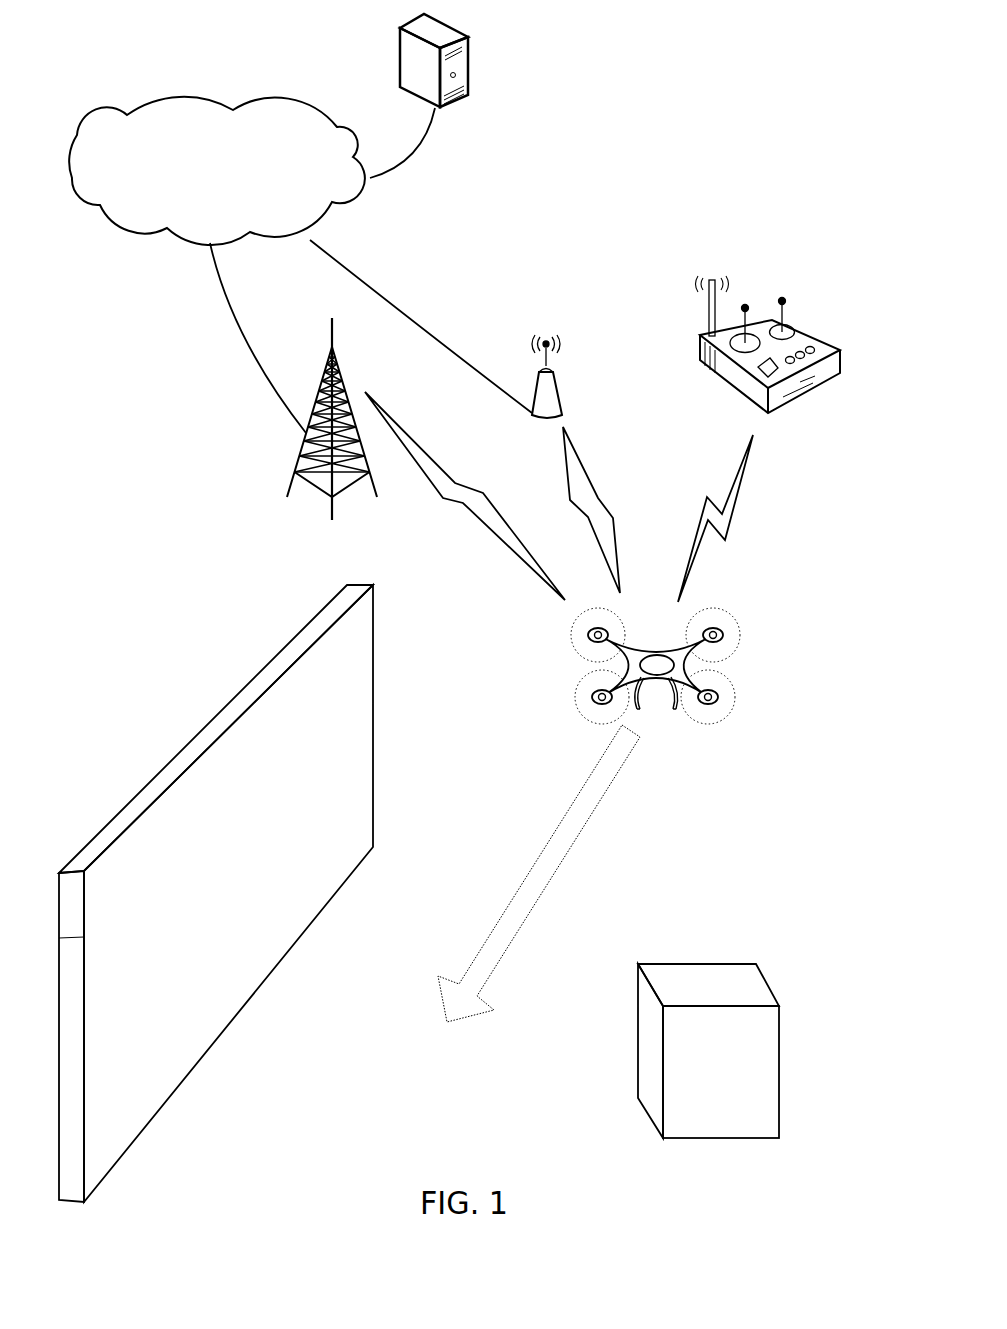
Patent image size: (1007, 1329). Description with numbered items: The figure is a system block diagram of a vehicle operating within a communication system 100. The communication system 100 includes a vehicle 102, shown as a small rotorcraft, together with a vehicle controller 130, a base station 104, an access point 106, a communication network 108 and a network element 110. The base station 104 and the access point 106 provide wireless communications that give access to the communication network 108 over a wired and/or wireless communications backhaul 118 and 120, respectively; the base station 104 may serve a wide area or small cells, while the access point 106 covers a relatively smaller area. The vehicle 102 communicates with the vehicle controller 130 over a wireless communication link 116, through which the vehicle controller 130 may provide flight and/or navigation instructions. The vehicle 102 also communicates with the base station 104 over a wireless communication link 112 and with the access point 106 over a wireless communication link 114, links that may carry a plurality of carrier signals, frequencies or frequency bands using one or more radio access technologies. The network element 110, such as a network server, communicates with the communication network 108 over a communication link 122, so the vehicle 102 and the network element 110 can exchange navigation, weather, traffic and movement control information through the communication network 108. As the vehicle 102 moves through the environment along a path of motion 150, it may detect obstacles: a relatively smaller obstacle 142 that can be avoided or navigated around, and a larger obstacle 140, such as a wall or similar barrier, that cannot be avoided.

The communication system 100 is at (703, 132).
The vehicle 102 is at (733, 622).
The base station 104 is at (303, 455).
The access point 106 is at (557, 377).
The communication network 108 is at (237, 207).
The network element 110 is at (398, 62).
The wireless communication link 112 is at (480, 532).
The wireless communication link 114 is at (603, 498).
The wireless communication link 116 is at (740, 495).
The communications backhaul 118 is at (243, 323).
The communications backhaul 120 is at (393, 308).
The communication link 122 is at (413, 167).
The vehicle controller 130 is at (798, 322).
The obstacle 140 is at (190, 735).
The obstacle 142 is at (712, 964).
The path of motion 150 is at (545, 844).